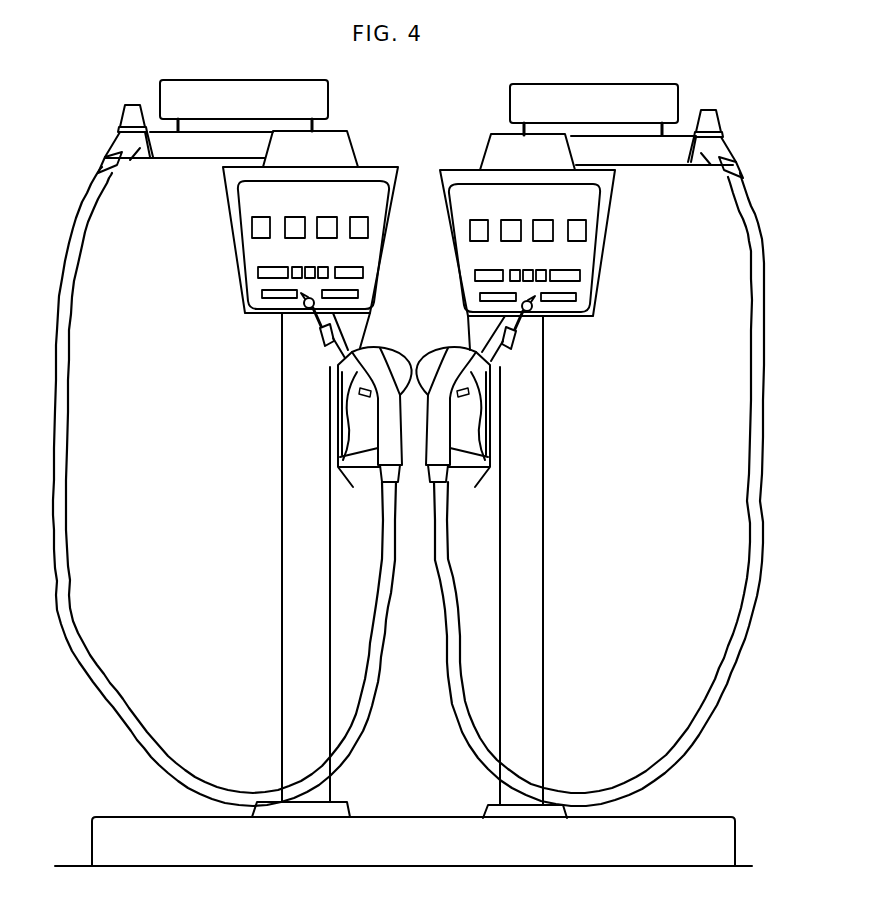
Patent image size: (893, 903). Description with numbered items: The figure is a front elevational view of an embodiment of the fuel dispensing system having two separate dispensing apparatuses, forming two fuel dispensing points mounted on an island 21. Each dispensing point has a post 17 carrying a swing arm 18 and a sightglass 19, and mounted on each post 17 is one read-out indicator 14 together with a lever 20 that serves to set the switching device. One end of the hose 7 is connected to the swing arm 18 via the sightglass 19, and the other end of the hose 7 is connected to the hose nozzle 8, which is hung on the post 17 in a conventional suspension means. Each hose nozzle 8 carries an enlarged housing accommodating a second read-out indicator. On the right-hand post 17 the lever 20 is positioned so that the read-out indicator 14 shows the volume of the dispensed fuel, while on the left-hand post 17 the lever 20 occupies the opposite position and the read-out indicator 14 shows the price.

The hose 7 is at (70, 305).
The hose nozzle 8 is at (440, 428).
The read-out indicator 14 is at (470, 250).
The post 17 is at (480, 813).
The swing arm 18 is at (182, 148).
The sightglass 19 is at (131, 109).
The lever 20 is at (316, 327).
The island 21 is at (120, 826).